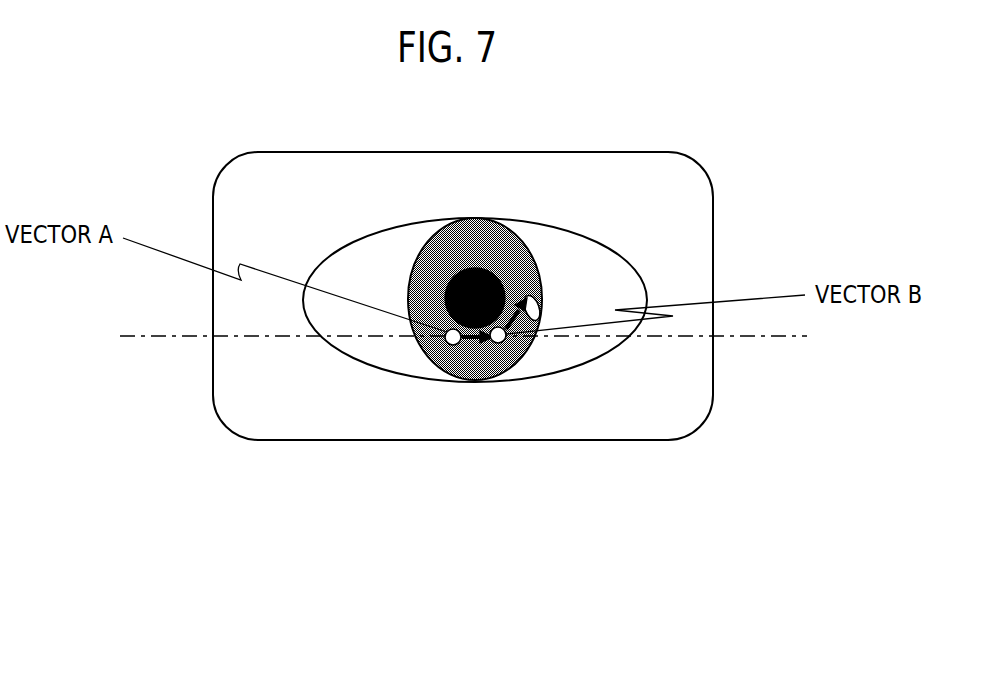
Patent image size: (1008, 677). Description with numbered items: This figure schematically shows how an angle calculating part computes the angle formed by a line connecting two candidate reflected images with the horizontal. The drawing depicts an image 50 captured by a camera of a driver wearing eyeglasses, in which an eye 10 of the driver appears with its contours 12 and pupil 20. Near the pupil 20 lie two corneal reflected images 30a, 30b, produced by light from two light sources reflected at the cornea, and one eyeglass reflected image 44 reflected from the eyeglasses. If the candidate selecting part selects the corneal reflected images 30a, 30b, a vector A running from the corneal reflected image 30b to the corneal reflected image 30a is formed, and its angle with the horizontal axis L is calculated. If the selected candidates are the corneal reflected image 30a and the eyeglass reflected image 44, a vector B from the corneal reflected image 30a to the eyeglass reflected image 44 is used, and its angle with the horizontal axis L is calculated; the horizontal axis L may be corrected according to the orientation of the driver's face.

The eye 10 is at (571, 294).
The contours 12 is at (352, 243).
The pupil 20 is at (470, 265).
The corneal reflected image 30a is at (504, 344).
The corneal reflected image 30b is at (447, 341).
The eyeglass reflected image 44 is at (545, 297).
The image 50 is at (445, 441).
The horizontal axis L is at (172, 337).